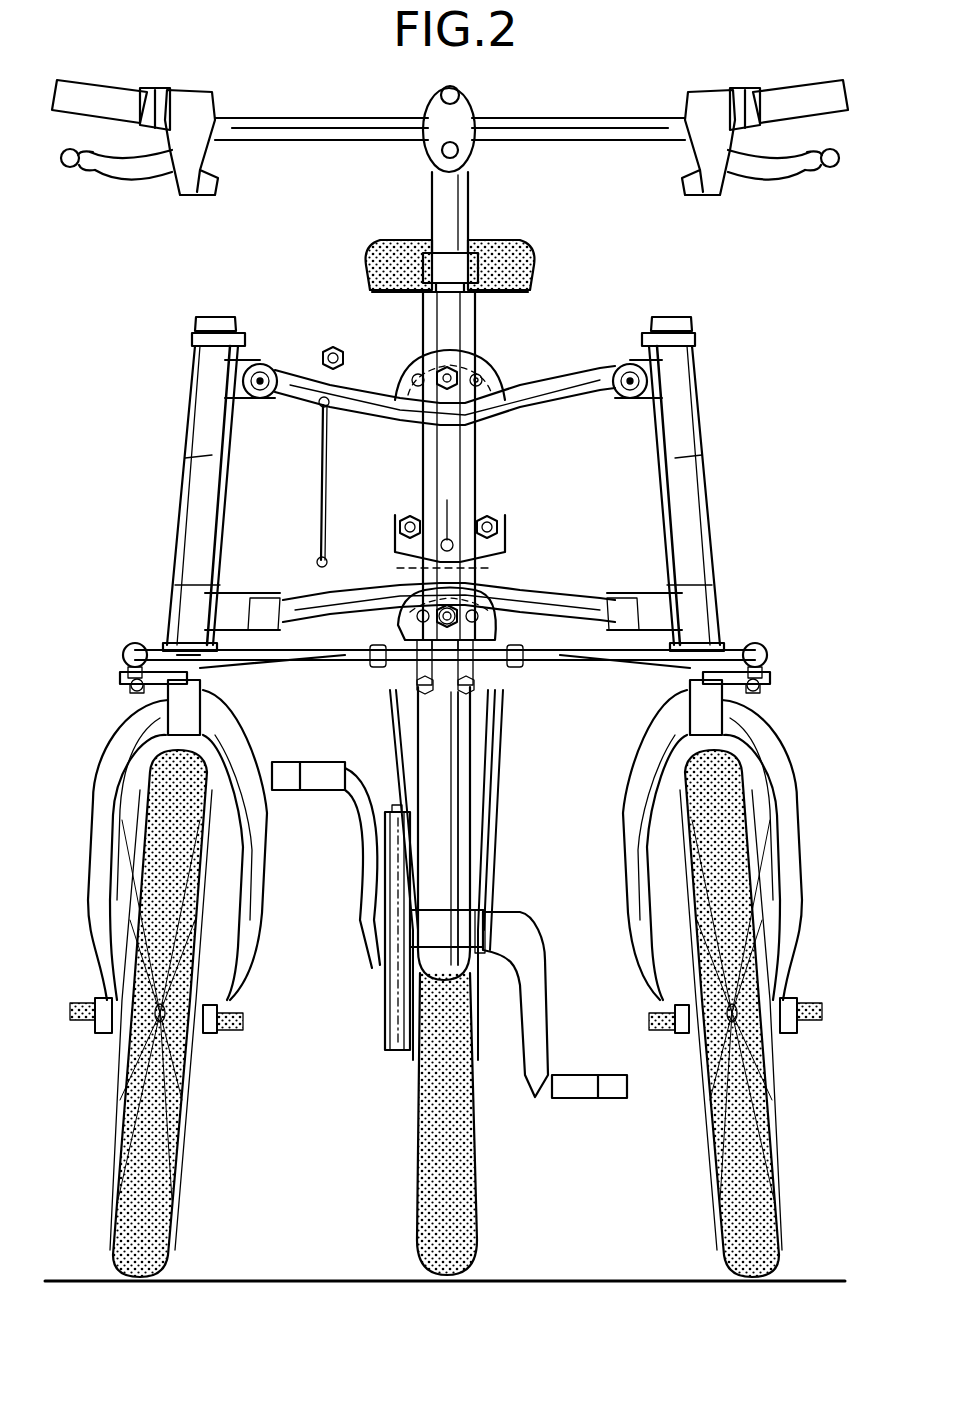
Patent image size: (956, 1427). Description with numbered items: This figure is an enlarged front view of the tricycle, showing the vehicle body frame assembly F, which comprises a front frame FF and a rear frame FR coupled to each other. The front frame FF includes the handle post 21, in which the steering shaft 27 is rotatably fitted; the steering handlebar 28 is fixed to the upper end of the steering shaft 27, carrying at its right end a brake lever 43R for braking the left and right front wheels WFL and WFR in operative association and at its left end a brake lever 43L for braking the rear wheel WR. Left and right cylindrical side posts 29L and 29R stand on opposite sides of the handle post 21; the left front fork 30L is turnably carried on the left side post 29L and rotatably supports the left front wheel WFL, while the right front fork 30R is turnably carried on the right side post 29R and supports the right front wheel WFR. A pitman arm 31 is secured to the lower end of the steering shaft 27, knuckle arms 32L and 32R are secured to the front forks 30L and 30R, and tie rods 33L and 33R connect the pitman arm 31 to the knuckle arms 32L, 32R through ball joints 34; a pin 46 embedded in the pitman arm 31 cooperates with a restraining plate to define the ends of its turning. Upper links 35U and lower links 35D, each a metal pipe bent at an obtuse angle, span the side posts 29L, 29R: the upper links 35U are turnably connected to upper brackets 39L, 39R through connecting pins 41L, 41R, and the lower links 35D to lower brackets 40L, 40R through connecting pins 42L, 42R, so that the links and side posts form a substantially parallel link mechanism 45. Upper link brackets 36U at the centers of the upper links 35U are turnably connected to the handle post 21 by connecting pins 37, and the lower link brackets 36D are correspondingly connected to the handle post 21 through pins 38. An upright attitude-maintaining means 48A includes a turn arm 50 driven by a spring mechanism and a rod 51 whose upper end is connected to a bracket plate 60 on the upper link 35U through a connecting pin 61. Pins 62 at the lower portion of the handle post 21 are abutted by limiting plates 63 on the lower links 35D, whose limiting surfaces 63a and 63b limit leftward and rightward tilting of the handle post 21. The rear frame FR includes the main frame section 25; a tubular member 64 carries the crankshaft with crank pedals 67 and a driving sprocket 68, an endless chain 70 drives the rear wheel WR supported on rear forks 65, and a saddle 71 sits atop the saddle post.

The handle post 21 is at (468, 475).
The main frame section 25 is at (455, 855).
The steering shaft 27 is at (450, 215).
The steering handlebar 28 is at (515, 128).
The left side post 29L is at (710, 525).
The right side post 29R is at (185, 458).
The left front fork 30L is at (780, 748).
The right front fork 30R is at (100, 800).
The pitman arm 31 is at (428, 690).
The knuckle arm 32L is at (775, 680).
The knuckle arm 32R is at (130, 686).
The tie rod 33L is at (597, 665).
The tie rod 33R is at (308, 665).
The ball joint 34 is at (135, 645).
The lower link 35D is at (585, 600).
The upper link 35U is at (558, 350).
The lower link bracket 36D is at (470, 720).
The upper link bracket 36U is at (425, 350).
The connecting pin 37 is at (482, 372).
The bolt 38 is at (462, 580).
The upper bracket 39L is at (700, 425).
The upper bracket 39R is at (222, 325).
The lower bracket 40L is at (702, 560).
The lower bracket 40R is at (240, 598).
The connecting pin 41L is at (675, 325).
The connecting pin 41R is at (230, 375).
The connecting pin 42L is at (640, 628).
The connecting pin 42R is at (262, 598).
The brake lever 43L is at (738, 172).
The brake lever 43R is at (145, 175).
The parallel link mechanism 45 is at (710, 370).
The pin 46 is at (449, 695).
The upright attitude-maintaining means 48A is at (318, 452).
The turn arm 50 is at (355, 665).
The rod 51 is at (316, 478).
The bracket plate 60 is at (345, 355).
The connecting pin 61 is at (328, 352).
The pin 62 is at (478, 440).
The limiting plate 63 is at (460, 545).
The limiting surface 63a is at (483, 518).
The limiting surface 63b is at (418, 515).
The tubular member 64 is at (495, 930).
The rear fork 65 is at (490, 800).
The crank pedal 67 is at (298, 792).
The driving sprocket 68 is at (392, 1025).
The endless chain 70 is at (398, 945).
The saddle 71 is at (412, 245).
The vehicle body frame assembly F is at (402, 300).
The front frame FF is at (490, 300).
The rear frame FR is at (522, 832).
The left front wheel WFL is at (735, 1130).
The right front wheel WFR is at (170, 1110).
The rear wheel WR is at (430, 1110).